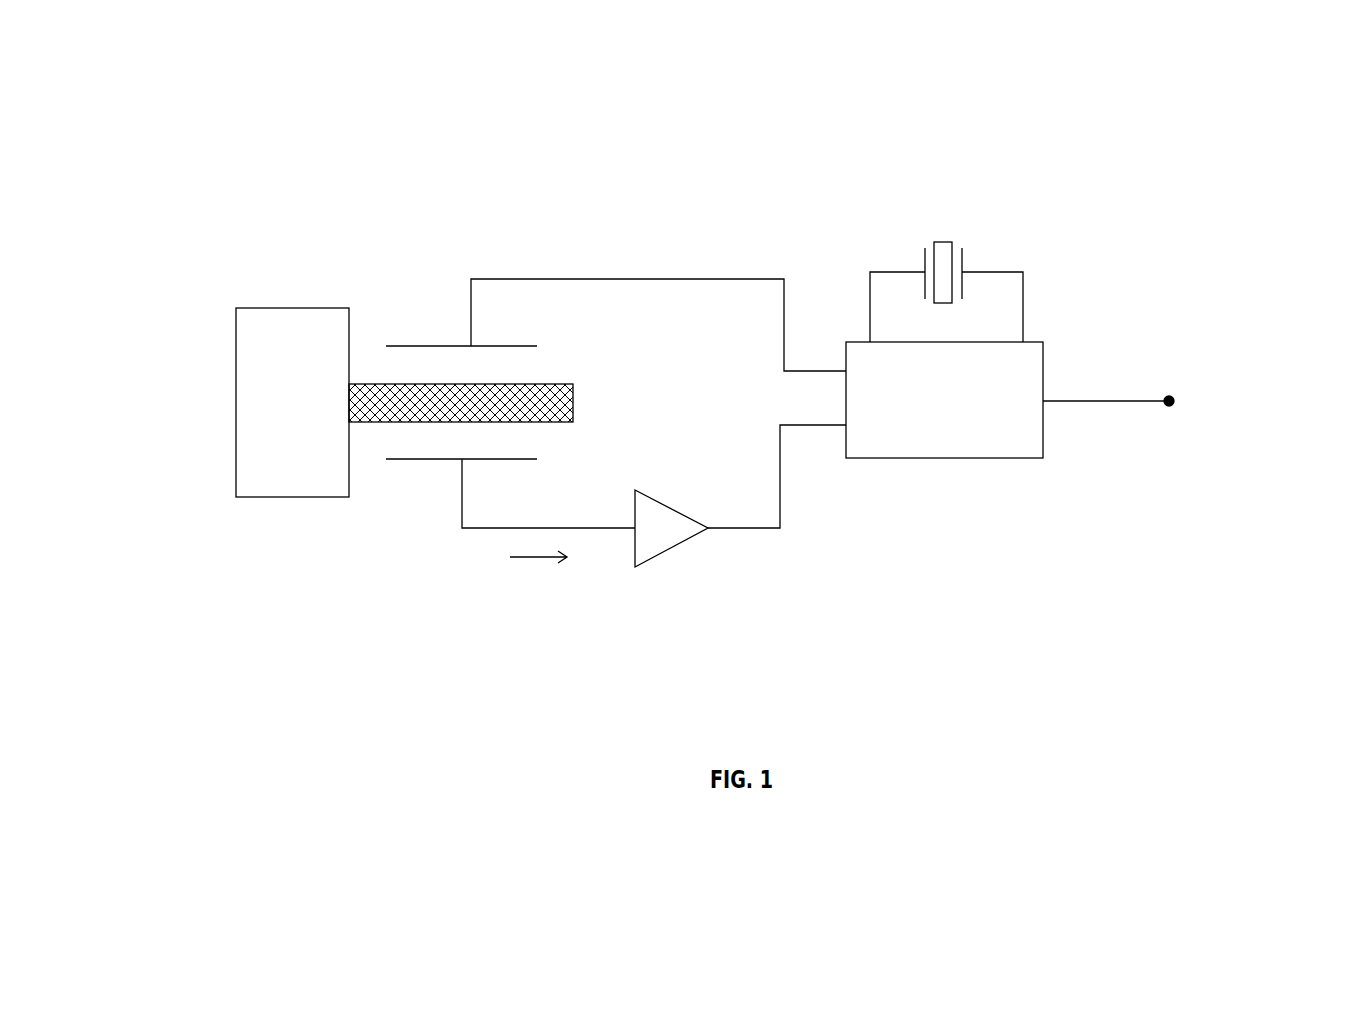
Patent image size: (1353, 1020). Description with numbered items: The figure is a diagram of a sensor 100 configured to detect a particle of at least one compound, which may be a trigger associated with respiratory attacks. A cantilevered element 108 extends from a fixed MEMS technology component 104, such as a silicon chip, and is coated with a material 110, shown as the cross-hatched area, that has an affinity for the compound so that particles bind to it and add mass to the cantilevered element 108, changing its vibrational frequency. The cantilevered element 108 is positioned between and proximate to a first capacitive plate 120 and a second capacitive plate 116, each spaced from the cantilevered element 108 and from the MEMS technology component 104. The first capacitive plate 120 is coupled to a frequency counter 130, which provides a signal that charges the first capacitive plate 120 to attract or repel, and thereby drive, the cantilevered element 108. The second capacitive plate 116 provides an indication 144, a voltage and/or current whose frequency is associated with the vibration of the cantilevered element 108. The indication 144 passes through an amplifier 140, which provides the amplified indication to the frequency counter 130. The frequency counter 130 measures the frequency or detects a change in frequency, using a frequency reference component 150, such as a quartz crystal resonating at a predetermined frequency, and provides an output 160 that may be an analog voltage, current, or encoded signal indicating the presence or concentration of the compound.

The sensor 100 is at (185, 103).
The MEMS technology component 104 is at (259, 308).
The cantilevered element 108 is at (565, 384).
The material 110 is at (547, 410).
The second capacitive plate 116 is at (508, 459).
The first capacitive plate 120 is at (508, 346).
The frequency counter 130 is at (1015, 458).
The amplifier 140 is at (667, 550).
The indication 144 is at (530, 557).
The frequency reference component 150 is at (963, 258).
The output 160 is at (1171, 405).